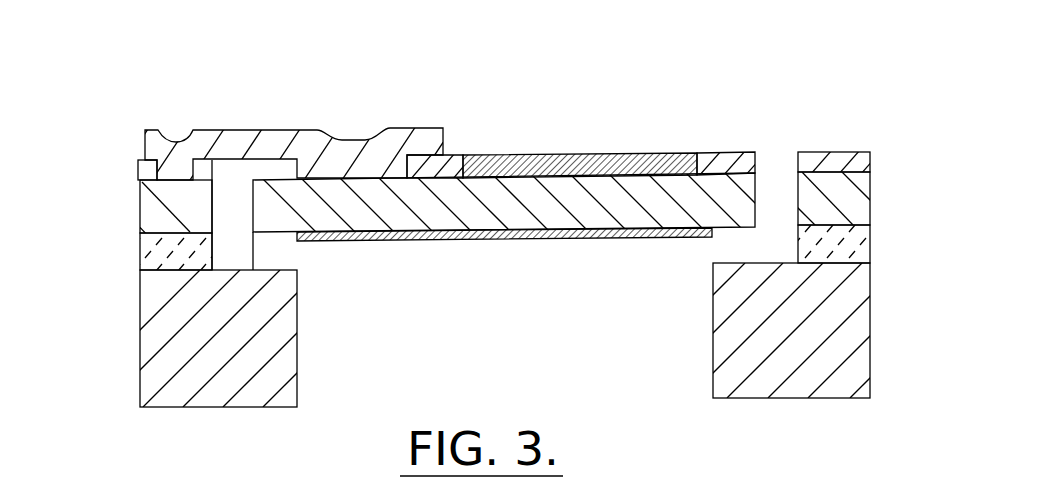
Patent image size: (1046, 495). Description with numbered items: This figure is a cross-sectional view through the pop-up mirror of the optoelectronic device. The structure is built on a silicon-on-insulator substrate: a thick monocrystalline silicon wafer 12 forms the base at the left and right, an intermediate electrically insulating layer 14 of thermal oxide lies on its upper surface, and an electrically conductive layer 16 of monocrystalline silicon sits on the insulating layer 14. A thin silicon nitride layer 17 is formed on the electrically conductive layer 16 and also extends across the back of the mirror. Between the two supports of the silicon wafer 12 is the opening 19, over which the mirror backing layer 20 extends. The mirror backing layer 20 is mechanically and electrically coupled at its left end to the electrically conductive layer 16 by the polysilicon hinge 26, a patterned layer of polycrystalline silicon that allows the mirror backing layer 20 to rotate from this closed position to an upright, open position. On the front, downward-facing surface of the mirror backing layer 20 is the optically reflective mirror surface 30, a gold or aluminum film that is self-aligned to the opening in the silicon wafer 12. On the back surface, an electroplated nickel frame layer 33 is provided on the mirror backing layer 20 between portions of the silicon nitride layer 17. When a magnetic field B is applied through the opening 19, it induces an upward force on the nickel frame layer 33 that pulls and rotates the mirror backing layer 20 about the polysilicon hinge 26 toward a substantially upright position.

The silicon wafer 12 is at (140, 342).
The intermediate electrically insulating layer 14 is at (140, 252).
The electrically conductive layer 16 is at (138, 205).
The silicon nitride layer 17 is at (138, 172).
The opening 19 is at (386, 385).
The mirror backing layer 20 is at (522, 214).
The polysilicon hinge 26 is at (277, 145).
The mirror surface 30 is at (552, 246).
The nickel frame layer 33 is at (580, 148).